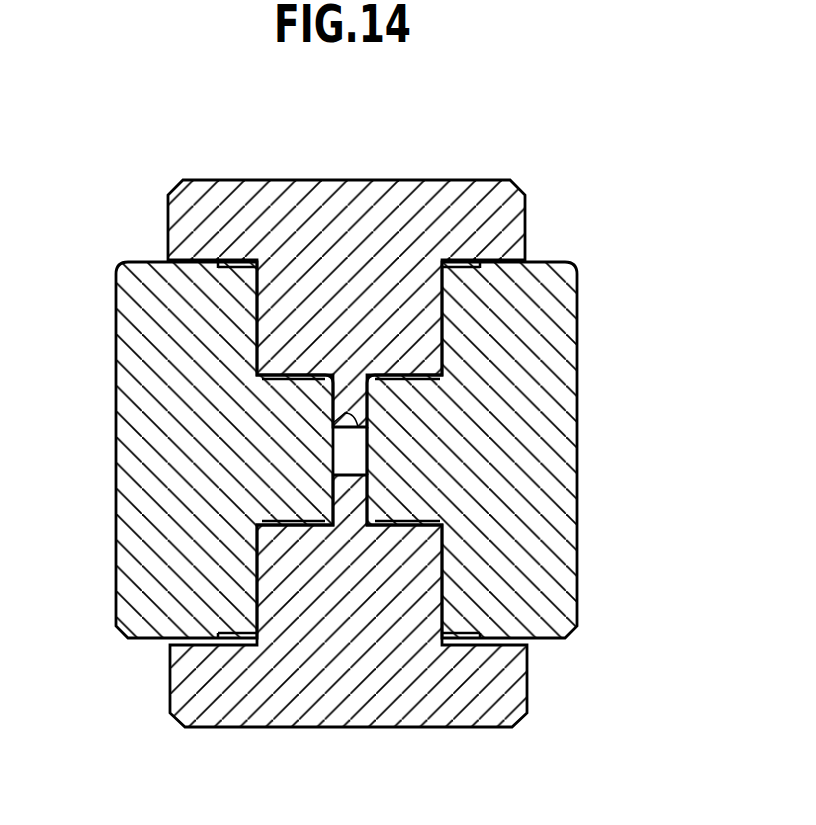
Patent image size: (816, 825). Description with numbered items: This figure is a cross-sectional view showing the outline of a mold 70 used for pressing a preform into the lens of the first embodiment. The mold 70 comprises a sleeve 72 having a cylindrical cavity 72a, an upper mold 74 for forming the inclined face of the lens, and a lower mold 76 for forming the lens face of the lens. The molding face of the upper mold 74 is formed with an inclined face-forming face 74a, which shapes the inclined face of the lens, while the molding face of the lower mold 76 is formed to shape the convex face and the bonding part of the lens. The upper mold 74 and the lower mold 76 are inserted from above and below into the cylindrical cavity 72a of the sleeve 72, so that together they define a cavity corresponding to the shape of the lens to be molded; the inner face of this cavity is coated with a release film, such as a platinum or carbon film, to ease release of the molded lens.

The mold 70 is at (585, 183).
The sleeve 72 is at (127, 430).
The cylindrical cavity 72a is at (357, 447).
The upper mold 74 is at (362, 187).
The inclined face-forming face 74a is at (340, 414).
The lower mold 76 is at (443, 715).